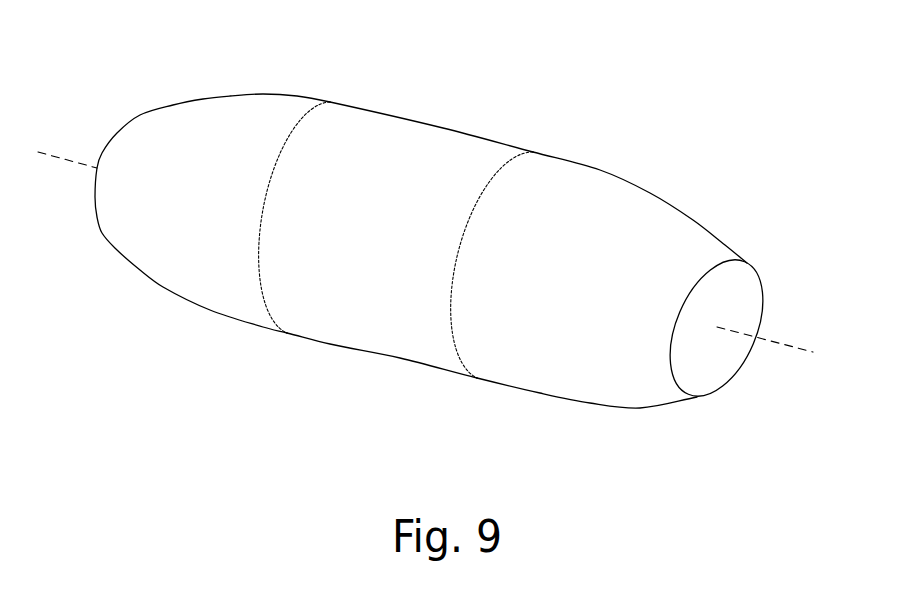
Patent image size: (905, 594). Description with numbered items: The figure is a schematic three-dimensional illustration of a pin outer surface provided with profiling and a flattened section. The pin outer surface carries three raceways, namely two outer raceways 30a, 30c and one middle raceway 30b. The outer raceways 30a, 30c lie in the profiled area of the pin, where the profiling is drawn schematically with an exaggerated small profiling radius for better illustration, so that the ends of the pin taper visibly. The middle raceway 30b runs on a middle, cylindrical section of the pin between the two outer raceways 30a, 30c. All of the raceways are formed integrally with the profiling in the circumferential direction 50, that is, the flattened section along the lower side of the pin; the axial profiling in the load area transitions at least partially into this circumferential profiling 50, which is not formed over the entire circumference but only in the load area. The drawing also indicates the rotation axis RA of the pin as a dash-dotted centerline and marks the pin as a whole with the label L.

The outer raceway 30a is at (265, 92).
The middle raceway 30b is at (443, 127).
The outer raceway 30c is at (630, 177).
The profiling in the circumferential direction 50 is at (327, 342).
The rotation axis RA is at (777, 340).
The lens L is at (517, 428).